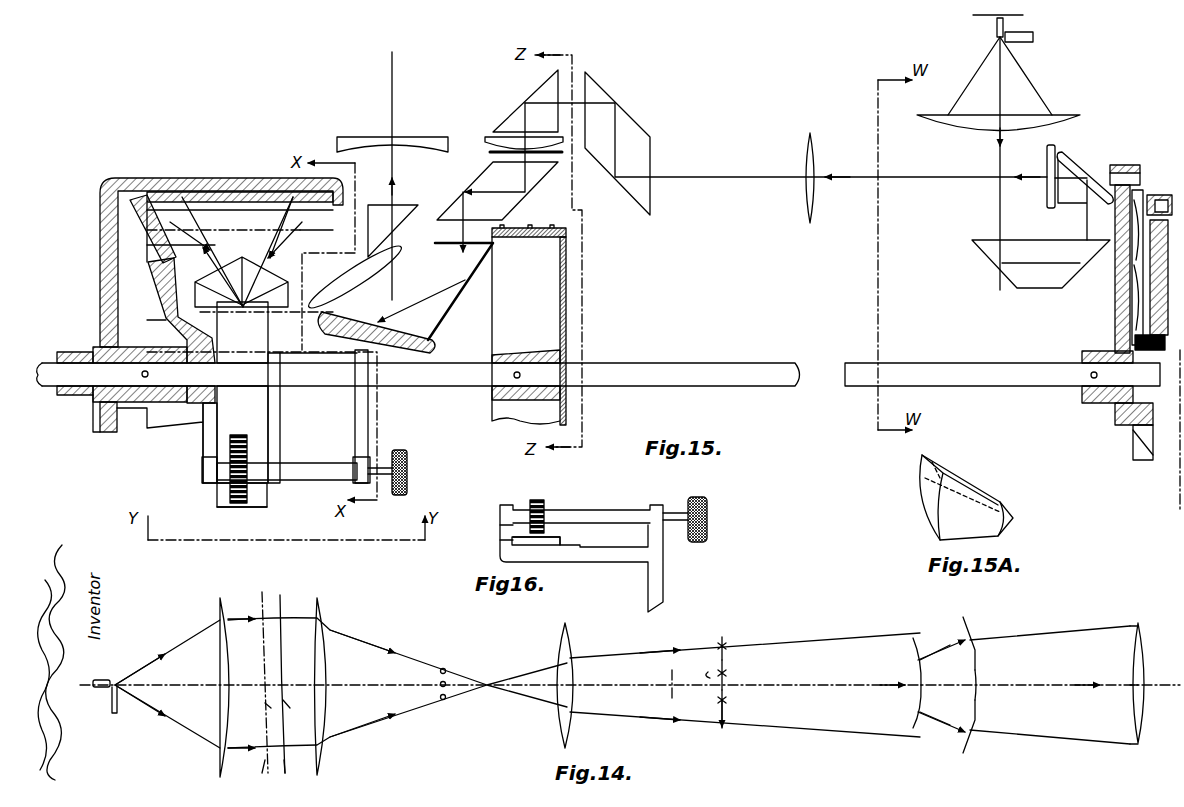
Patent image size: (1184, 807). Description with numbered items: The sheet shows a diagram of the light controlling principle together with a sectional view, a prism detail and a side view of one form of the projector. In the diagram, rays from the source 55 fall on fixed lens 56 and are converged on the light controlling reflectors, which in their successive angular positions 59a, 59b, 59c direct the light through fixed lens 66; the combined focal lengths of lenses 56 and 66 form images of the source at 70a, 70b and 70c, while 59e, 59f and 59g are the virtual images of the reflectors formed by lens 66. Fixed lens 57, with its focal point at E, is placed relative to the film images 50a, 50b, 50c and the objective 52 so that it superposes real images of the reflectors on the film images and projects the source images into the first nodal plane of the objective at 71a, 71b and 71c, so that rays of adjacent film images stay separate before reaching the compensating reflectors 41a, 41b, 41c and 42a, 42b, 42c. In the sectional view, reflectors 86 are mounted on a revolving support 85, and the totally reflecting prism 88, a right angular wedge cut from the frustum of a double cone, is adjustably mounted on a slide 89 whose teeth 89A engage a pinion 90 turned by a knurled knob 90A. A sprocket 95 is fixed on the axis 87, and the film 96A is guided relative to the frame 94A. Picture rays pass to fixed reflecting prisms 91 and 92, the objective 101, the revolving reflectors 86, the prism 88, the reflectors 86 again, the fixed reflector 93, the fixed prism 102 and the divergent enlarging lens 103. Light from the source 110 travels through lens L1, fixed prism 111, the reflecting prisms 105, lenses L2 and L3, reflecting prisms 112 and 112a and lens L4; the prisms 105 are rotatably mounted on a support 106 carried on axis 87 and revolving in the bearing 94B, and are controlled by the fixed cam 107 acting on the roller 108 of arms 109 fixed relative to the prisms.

In FIG. 15, the revolving support 85 is at (205, 179).
In FIG. 15, the reflectors 86 is at (232, 203).
In FIG. 15, the axis 87 is at (422, 388).
In FIG. 15, the totally reflecting prism 88 is at (272, 280).
In FIG. 15A, the totally reflecting prism 88 is at (960, 498).
In FIG. 15, the slide 89 is at (260, 495).
In FIG. 16, the slide 89 is at (545, 547).
In FIG. 15, the teeth 89A is at (243, 507).
In FIG. 15, the pinion 90 is at (233, 480).
In FIG. 16, the pinion 90 is at (540, 500).
In FIG. 15, the knurled knob 90A is at (407, 479).
In FIG. 16, the knurled knob 90A is at (708, 505).
In FIG. 15, the fixed reflecting prism 91 is at (510, 200).
In FIG. 15, the fixed reflecting prism 92 is at (418, 262).
In FIG. 15, the fixed reflector 93 is at (176, 243).
In FIG. 15, the frame 94A is at (364, 431).
In FIG. 16, the frame 94A is at (664, 580).
In FIG. 15, the bearing 94B is at (1130, 422).
In FIG. 15, the sprocket 95 is at (568, 342).
In FIG. 15, the film 96A is at (491, 153).
In FIG. 15, the objective 101 is at (362, 283).
In FIG. 15, the fixed prism 102 is at (400, 210).
In FIG. 15, the divergent lens 103 is at (365, 137).
In FIG. 15, the reflecting prisms 105 is at (1068, 168).
In FIG. 15, the support 106 is at (1118, 314).
In FIG. 15, the fixed cam 107 is at (1140, 452).
In FIG. 15, the roller 108 is at (1162, 195).
In FIG. 15, the arms 109 is at (1138, 165).
In FIG. 15, the light source 110 is at (1023, 37).
In FIG. 15, the fixed prism 111 is at (1023, 272).
In FIG. 15, the reflecting prism 112 is at (651, 148).
In FIG. 15, the reflecting prism 112a is at (527, 100).
In FIG. 15, the lens L1 is at (940, 116).
In FIG. 15, the lens L2 is at (1047, 193).
In FIG. 15, the lens L3 is at (808, 222).
In FIG. 15, the lens L4 is at (488, 145).
In FIG. 14, the light source 55 is at (118, 712).
In FIG. 14, the fixed lens 56 is at (219, 608).
In FIG. 14, the fixed lens 57 is at (572, 640).
In FIG. 14, the light controlling reflector position 59a is at (300, 769).
In FIG. 14, the light controlling reflector position 59b is at (303, 702).
In FIG. 14, the light controlling reflector position 59c is at (285, 600).
In FIG. 14, the virtual image of reflector 59e is at (246, 769).
In FIG. 14, the virtual image of reflector 59f is at (254, 702).
In FIG. 14, the virtual image of reflector 59g is at (267, 592).
In FIG. 14, the fixed lens 66 is at (328, 620).
In FIG. 14, the image of the source 70a is at (443, 700).
In FIG. 14, the image of the source 70b is at (440, 690).
In FIG. 14, the image of the source 70c is at (441, 669).
In FIG. 14, the focal point E is at (670, 670).
In FIG. 14, the film image 50a is at (727, 648).
In FIG. 14, the film image 50b is at (727, 674).
In FIG. 14, the film image 50c is at (727, 700).
In FIG. 14, the compensating reflector 41a is at (916, 660).
In FIG. 14, the compensating reflector 41b is at (919, 692).
In FIG. 14, the compensating reflector 41c is at (915, 725).
In FIG. 14, the compensating reflector 42a is at (978, 645).
In FIG. 14, the compensating reflector 42b is at (980, 680).
In FIG. 14, the compensating reflector 42c is at (978, 735).
In FIG. 14, the objective 52 is at (1137, 626).
In FIG. 14, the image of the source 71a is at (1128, 628).
In FIG. 14, the image of the source 71b is at (1128, 684).
In FIG. 14, the image of the source 71c is at (1128, 745).